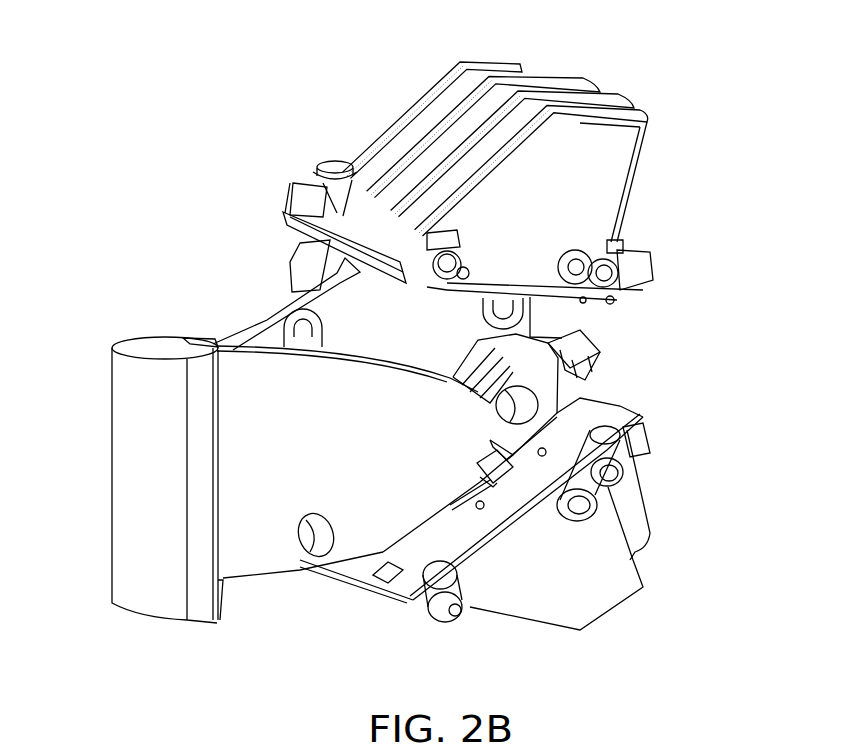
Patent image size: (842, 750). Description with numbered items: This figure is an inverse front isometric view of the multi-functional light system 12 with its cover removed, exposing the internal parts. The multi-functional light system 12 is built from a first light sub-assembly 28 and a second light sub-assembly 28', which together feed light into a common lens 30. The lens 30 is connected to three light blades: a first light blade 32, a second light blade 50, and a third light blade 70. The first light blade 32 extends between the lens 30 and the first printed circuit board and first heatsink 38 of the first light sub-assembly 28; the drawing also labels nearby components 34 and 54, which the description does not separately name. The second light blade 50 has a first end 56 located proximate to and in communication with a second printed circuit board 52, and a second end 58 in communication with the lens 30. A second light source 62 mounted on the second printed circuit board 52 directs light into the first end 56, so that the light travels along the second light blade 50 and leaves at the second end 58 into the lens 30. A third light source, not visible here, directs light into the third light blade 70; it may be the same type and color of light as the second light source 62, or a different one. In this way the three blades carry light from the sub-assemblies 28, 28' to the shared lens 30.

The multi-functional light system 12 is at (706, 226).
The first light sub-assembly 28 is at (448, 153).
The second light sub-assembly 28' is at (508, 501).
The lens 30 is at (125, 484).
The first light blade 32 is at (262, 318).
The clamp bar 34 is at (315, 242).
The first heatsink 38 is at (490, 188).
The second light blade 50 is at (237, 542).
The second printed circuit board 52 is at (617, 407).
The bracket boot 54 is at (633, 560).
The first end 56 is at (407, 520).
The second end 58 is at (228, 425).
The second light source 62 is at (480, 490).
The third light blade 70 is at (203, 333).